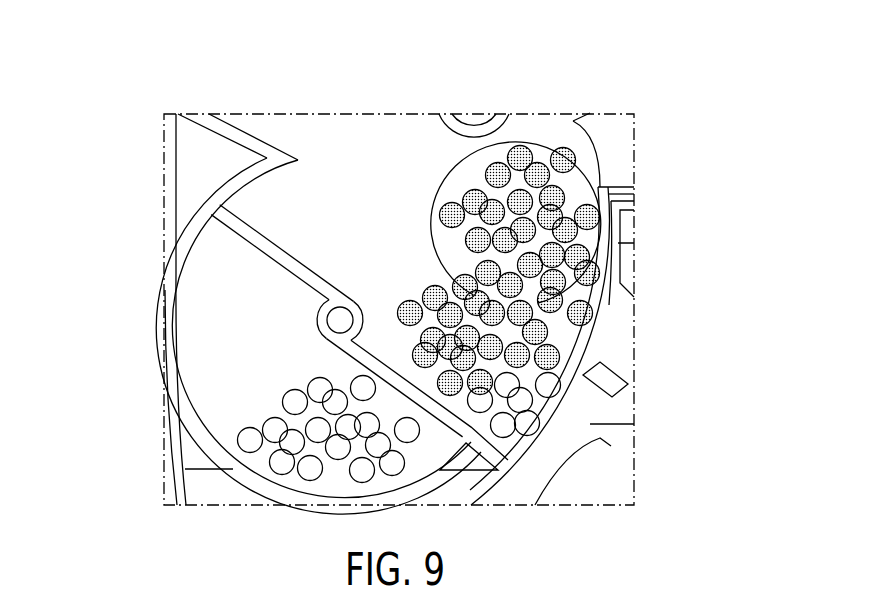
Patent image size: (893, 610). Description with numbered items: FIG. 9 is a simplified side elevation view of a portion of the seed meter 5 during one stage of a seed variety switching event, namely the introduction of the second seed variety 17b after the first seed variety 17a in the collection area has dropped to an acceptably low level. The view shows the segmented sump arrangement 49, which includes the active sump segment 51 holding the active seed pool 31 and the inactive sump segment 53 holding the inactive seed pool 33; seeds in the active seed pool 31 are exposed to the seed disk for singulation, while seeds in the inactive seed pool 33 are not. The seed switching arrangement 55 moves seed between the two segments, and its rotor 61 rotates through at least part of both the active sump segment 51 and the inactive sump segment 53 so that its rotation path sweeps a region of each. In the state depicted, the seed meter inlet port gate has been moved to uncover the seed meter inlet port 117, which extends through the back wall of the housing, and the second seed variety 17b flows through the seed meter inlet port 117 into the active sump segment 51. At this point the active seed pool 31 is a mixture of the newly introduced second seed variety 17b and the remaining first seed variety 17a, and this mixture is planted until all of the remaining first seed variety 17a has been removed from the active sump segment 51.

The seed meter 5 is at (628, 95).
The segmented sump arrangement 49 is at (314, 157).
The inactive sump segment 53 is at (222, 418).
The seed switching arrangement 55 is at (146, 387).
The inactive seed pool 33 is at (247, 444).
The rotor 61 is at (244, 246).
The active sump segment 51 is at (616, 279).
The active seed pool 31 is at (533, 408).
The seed meter inlet port 117 is at (582, 233).
The second seed variety 17b is at (610, 340).
The first seed variety 17a is at (318, 386).